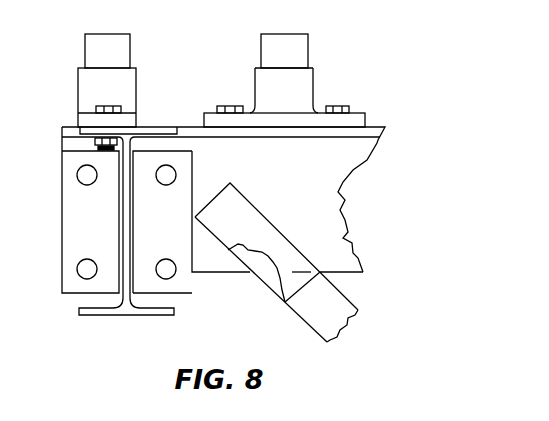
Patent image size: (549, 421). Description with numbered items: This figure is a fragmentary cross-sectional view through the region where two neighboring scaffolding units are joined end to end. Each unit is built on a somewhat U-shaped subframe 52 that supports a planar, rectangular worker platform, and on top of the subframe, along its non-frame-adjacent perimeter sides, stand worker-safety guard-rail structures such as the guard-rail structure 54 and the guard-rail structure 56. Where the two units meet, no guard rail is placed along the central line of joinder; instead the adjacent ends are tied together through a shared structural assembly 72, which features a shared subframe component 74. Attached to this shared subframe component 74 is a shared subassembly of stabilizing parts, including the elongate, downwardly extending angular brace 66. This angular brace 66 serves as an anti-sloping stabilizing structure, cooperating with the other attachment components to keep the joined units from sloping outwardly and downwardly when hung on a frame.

The subframe 52 is at (93, 313).
The guard-rail structure 54 is at (260, 53).
The guard-rail structure 56 is at (131, 53).
The angular brace 66 is at (333, 302).
The shared structural assembly 72 is at (393, 165).
The shared subframe component 74 is at (333, 224).